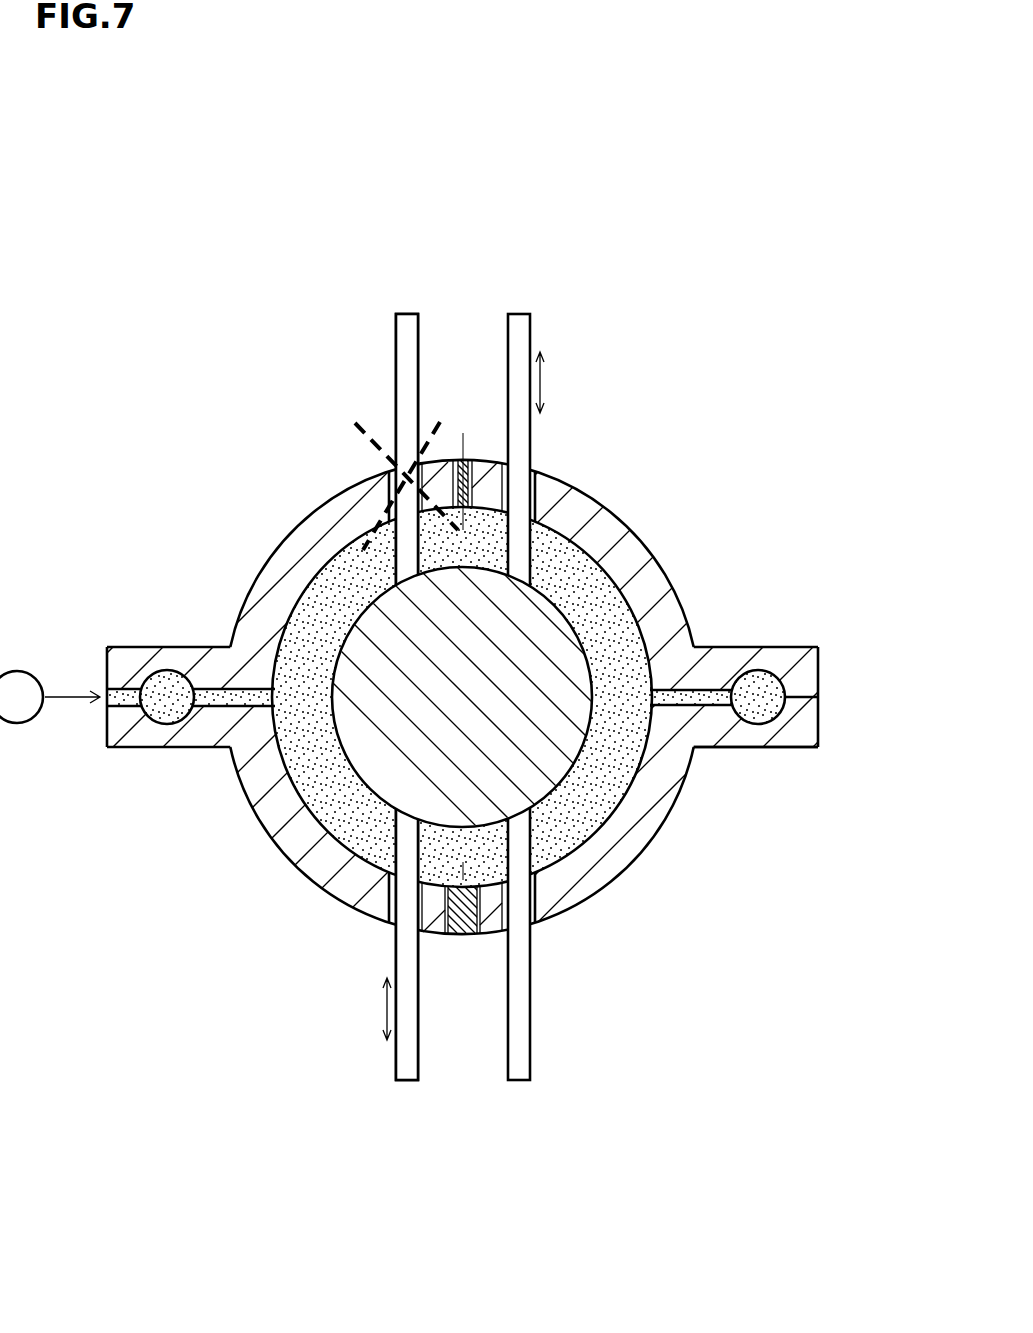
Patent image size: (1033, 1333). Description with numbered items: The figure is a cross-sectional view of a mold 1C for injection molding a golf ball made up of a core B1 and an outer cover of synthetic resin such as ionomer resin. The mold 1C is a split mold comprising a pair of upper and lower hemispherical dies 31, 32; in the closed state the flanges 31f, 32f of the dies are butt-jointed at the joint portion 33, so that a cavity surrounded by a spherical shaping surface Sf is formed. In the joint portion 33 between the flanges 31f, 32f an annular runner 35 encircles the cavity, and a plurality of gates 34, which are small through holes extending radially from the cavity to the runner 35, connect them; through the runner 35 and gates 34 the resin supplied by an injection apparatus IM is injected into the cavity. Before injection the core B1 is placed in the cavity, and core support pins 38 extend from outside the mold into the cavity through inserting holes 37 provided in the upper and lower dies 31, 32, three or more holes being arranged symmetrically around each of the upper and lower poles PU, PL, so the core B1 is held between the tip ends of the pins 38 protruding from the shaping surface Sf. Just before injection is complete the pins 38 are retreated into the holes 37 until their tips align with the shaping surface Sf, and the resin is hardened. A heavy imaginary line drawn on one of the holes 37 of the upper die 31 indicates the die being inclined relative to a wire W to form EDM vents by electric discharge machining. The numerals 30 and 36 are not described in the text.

The mold 1C is at (664, 432).
The heating element 30 is at (455, 445).
The upper hemispherical die 31 is at (636, 552).
The lower hemispherical die 32 is at (557, 880).
The flange of the upper hemispherical die 31f is at (813, 670).
The flange of the lower hemispherical die 32f is at (748, 748).
The joint portion 33 is at (800, 695).
The gate 34 is at (222, 706).
The annular runner 35 is at (165, 708).
The drive direction 36 is at (409, 1105).
The inserting hole 37 is at (394, 486).
The core support pin 38 is at (396, 360).
The wire W is at (378, 527).
The upper pole PU is at (452, 344).
The lower pole PL is at (468, 938).
The spherical shaping surface Sf is at (331, 792).
The core B1 is at (587, 797).
The injection apparatus IM is at (50, 697).